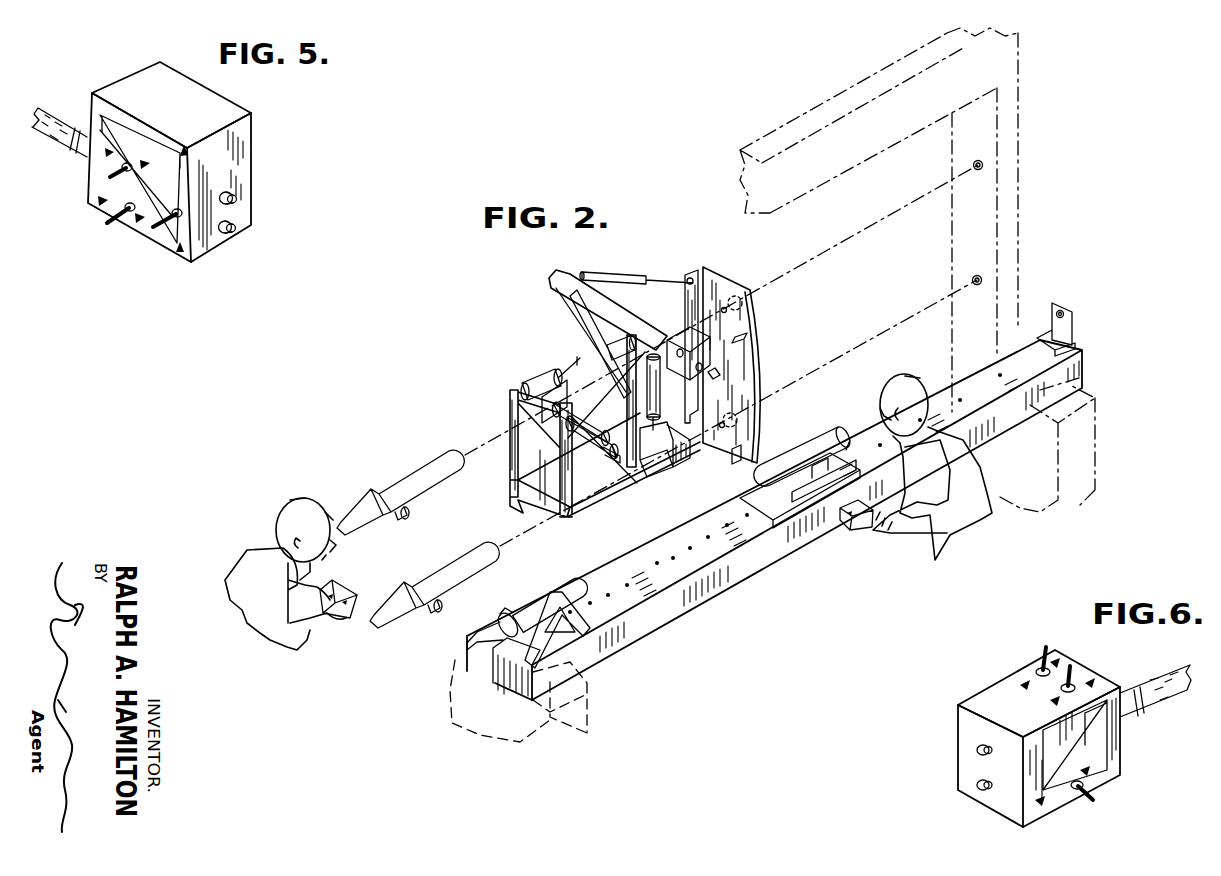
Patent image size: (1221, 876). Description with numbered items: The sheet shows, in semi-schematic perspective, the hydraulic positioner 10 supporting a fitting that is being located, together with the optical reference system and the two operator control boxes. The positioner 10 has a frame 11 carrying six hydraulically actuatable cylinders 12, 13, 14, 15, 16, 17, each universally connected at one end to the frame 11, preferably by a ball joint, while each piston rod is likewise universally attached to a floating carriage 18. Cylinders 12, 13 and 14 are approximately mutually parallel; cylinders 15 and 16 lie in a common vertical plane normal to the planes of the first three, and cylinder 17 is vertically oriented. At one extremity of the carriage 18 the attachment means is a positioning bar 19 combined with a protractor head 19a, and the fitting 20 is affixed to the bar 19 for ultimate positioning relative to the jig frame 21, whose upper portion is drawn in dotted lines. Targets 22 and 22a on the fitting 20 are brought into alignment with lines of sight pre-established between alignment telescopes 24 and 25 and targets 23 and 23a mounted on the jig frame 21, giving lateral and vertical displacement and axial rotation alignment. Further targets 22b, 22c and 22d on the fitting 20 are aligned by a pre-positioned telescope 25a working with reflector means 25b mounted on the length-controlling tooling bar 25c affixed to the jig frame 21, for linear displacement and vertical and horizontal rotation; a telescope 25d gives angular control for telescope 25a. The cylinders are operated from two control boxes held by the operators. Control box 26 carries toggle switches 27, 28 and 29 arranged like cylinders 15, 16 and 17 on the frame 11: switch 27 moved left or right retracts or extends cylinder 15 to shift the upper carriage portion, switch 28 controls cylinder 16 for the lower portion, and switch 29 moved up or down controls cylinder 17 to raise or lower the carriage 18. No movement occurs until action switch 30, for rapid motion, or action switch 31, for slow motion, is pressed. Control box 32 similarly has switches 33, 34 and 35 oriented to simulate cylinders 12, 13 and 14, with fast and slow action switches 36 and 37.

In FIG. 2, the hydraulic positioner 10 is at (522, 338).
In FIG. 2, the frame 11 is at (505, 420).
In FIG. 2, the hydraulic cylinder 12 is at (530, 378).
In FIG. 2, the hydraulic cylinder 13 is at (572, 378).
In FIG. 2, the hydraulic cylinder 14 is at (610, 463).
In FIG. 2, the hydraulic cylinder 15 is at (617, 347).
In FIG. 2, the hydraulic cylinder 16 is at (573, 440).
In FIG. 2, the hydraulic cylinder 17 is at (658, 412).
In FIG. 2, the floating carriage 18 is at (566, 292).
In FIG. 2, the positioning bar 19 is at (690, 295).
In FIG. 2, the protractor head 19a is at (687, 333).
In FIG. 2, the fitting 20 is at (713, 283).
In FIG. 2, the jig frame 21 is at (830, 98).
In FIG. 2, the target 22 is at (742, 305).
In FIG. 2, the target 22a is at (742, 422).
In FIG. 2, the target 22b is at (750, 330).
In FIG. 2, the target 22c is at (722, 372).
In FIG. 2, the target 22d is at (735, 462).
In FIG. 2, the target 23 is at (985, 165).
In FIG. 2, the target 23a is at (984, 279).
In FIG. 2, the alignment telescope 24 is at (420, 478).
In FIG. 2, the alignment telescope 25 is at (443, 583).
In FIG. 2, the alignment telescope 25a is at (800, 463).
In FIG. 2, the reflector means 25b is at (773, 484).
In FIG. 2, the tooling bar 25c is at (667, 610).
In FIG. 2, the telescope 25d is at (530, 610).
In FIG. 5, the control box 26 is at (187, 114).
In FIG. 2, the control box 26 is at (340, 588).
In FIG. 5, the toggle switch 27 is at (108, 177).
In FIG. 5, the toggle switch 28 is at (106, 224).
In FIG. 5, the toggle switch 29 is at (152, 229).
In FIG. 5, the action switch 30 is at (238, 199).
In FIG. 5, the action switch 31 is at (236, 231).
In FIG. 6, the control box 32 is at (1017, 712).
In FIG. 2, the control box 32 is at (845, 526).
In FIG. 6, the switch 33 is at (1040, 655).
In FIG. 6, the switch 34 is at (1078, 668).
In FIG. 6, the switch 35 is at (1092, 801).
In FIG. 6, the fast action switch 36 is at (975, 750).
In FIG. 6, the slow action switch 37 is at (979, 791).